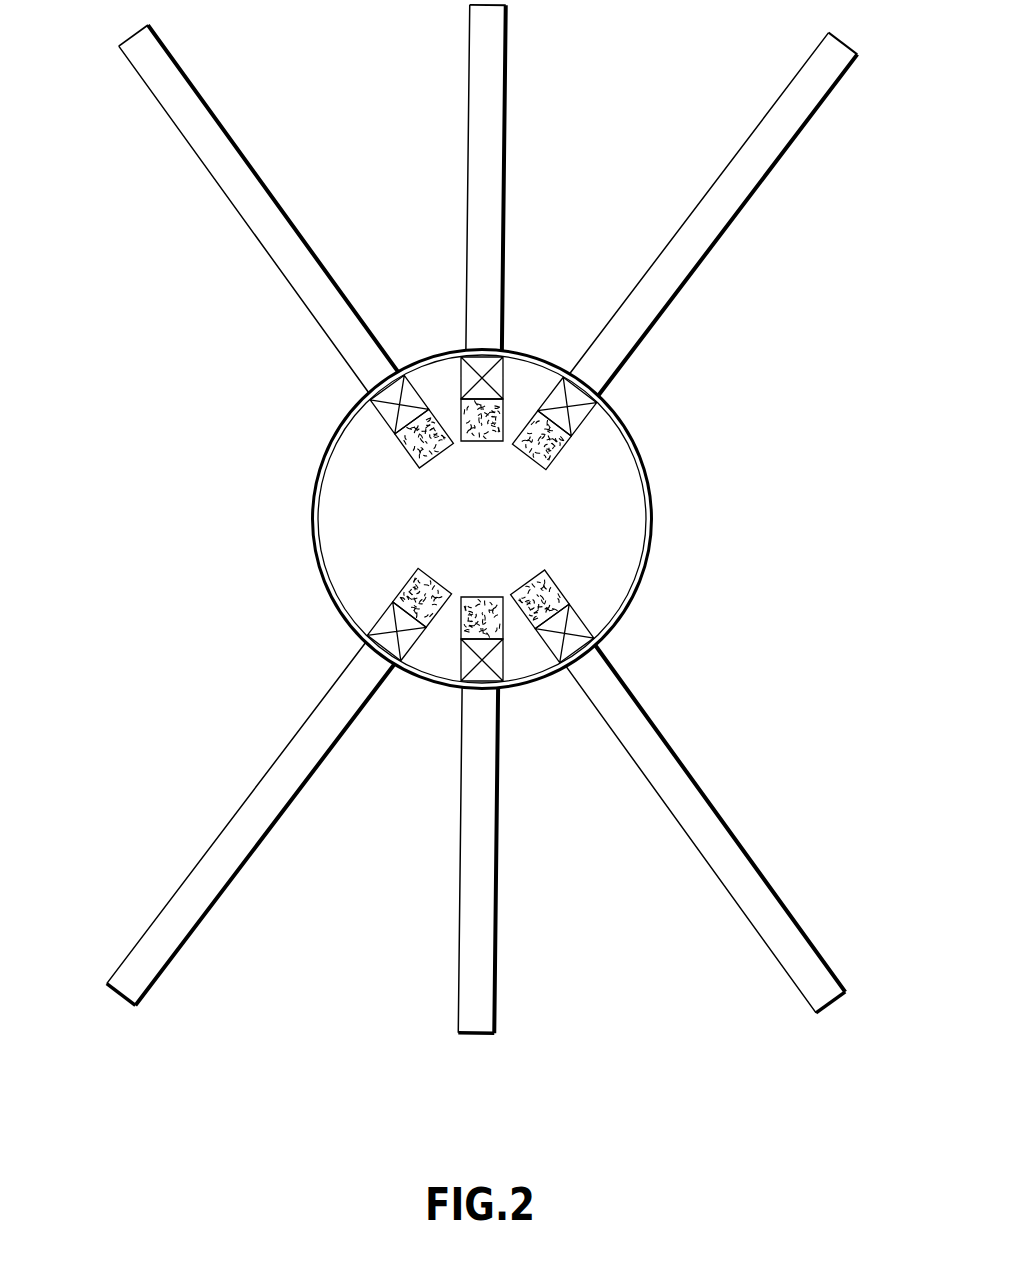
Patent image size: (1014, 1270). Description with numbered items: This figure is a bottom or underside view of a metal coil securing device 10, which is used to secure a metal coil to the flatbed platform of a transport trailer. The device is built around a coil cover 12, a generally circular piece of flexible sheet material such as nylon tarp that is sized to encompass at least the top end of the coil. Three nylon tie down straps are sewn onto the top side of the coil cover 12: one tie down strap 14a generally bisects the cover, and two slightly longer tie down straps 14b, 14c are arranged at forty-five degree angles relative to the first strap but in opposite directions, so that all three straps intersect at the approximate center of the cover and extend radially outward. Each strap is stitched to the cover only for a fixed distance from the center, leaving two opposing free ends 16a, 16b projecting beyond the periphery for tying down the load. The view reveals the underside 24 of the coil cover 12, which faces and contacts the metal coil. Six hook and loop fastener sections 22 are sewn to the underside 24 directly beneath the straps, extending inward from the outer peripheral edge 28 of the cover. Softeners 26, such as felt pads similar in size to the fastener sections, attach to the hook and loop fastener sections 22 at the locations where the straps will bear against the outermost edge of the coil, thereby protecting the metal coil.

The metal coil securing device 10 is at (742, 417).
The coil cover 12 is at (613, 473).
The tie down strap 14a is at (480, 858).
The tie down strap 14b is at (262, 823).
The tie down strap 14c is at (743, 867).
The free end 16a is at (115, 990).
The free end 16b is at (120, 45).
The hook and loop fastener section 22 is at (532, 458).
The underside 24 is at (499, 537).
The softener 26 is at (567, 428).
The outer peripheral edge 28 is at (648, 567).